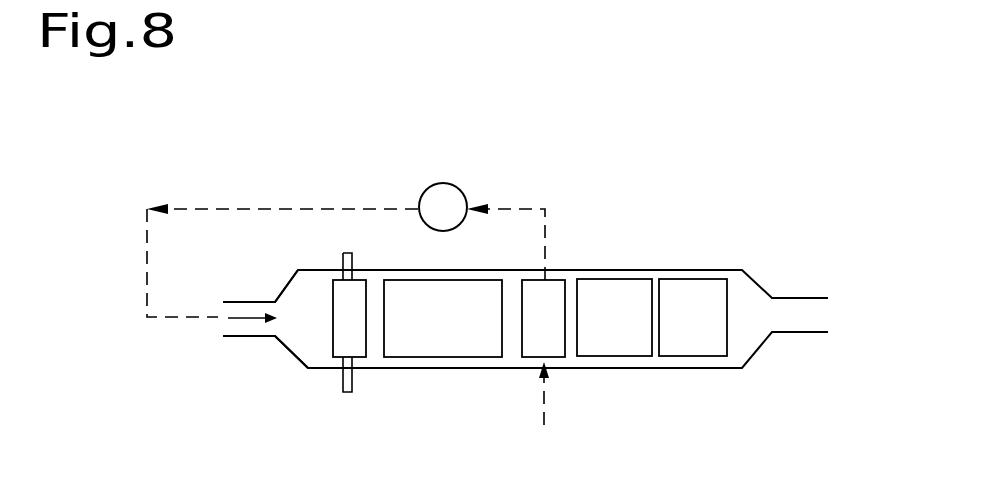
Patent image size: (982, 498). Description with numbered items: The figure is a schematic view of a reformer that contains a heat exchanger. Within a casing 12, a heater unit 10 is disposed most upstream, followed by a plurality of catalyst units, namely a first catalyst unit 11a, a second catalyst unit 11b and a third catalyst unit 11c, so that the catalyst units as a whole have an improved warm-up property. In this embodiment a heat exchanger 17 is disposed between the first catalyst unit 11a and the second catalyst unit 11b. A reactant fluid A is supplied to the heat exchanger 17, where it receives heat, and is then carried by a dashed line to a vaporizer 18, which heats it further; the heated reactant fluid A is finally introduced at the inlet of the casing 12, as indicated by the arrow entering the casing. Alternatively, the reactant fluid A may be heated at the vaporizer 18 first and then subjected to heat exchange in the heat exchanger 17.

The heater unit 10 is at (525, 368).
The first catalyst unit 11a is at (460, 280).
The second catalyst unit 11b is at (588, 357).
The third catalyst unit 11c is at (720, 357).
The casing 12 is at (289, 285).
The heat exchanger 17 is at (556, 280).
The vaporizer 18 is at (466, 194).
The reactant fluid A is at (555, 405).